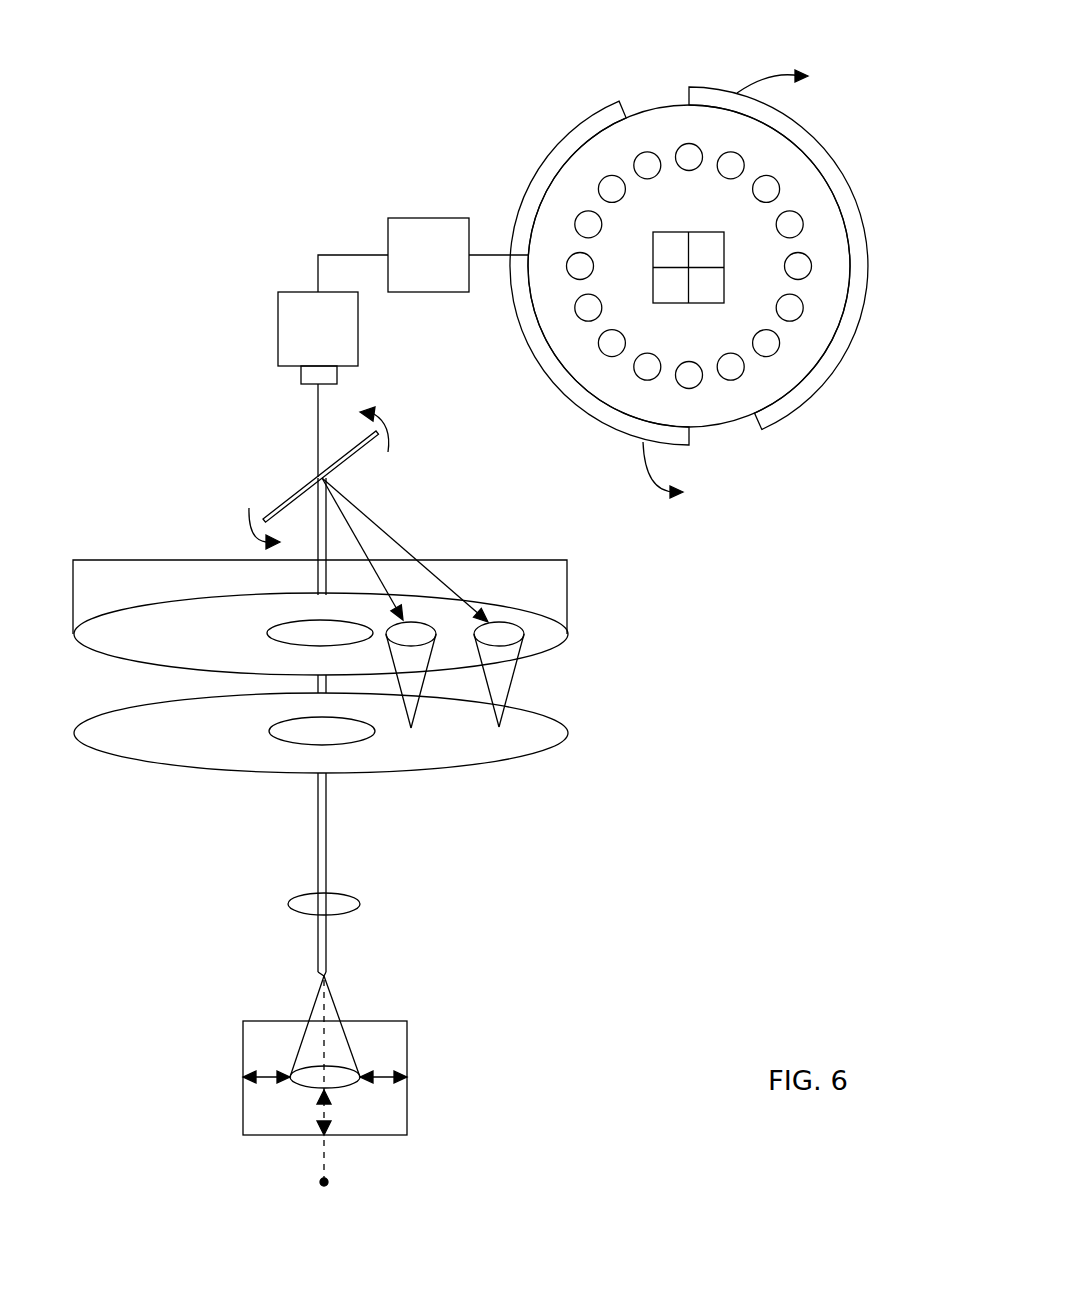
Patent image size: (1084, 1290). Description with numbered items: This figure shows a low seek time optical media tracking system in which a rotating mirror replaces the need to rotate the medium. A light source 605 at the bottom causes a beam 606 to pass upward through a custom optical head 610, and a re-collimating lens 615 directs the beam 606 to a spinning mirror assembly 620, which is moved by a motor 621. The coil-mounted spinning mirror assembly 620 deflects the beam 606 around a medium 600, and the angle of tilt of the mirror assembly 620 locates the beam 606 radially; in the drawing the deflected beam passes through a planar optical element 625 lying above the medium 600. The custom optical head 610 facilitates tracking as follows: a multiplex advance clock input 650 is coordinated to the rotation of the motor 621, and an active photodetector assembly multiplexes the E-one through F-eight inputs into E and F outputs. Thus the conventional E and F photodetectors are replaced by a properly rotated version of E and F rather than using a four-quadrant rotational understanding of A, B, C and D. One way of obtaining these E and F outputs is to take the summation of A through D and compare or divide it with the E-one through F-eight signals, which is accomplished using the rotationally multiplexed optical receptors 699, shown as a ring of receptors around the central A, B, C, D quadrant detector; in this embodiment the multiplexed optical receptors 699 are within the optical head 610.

The rotationally multiplexed optical receptors 699 is at (663, 107).
The multiplex advance clock input 650 is at (430, 204).
The motor 621 is at (278, 328).
The spinning mirror assembly 620 is at (285, 497).
The planar optical element 625 is at (396, 575).
The medium 600 is at (500, 748).
The beam 606 is at (318, 853).
The re-collimating lens 615 is at (343, 895).
The optical head 610 is at (407, 1045).
The light source 605 is at (328, 1183).